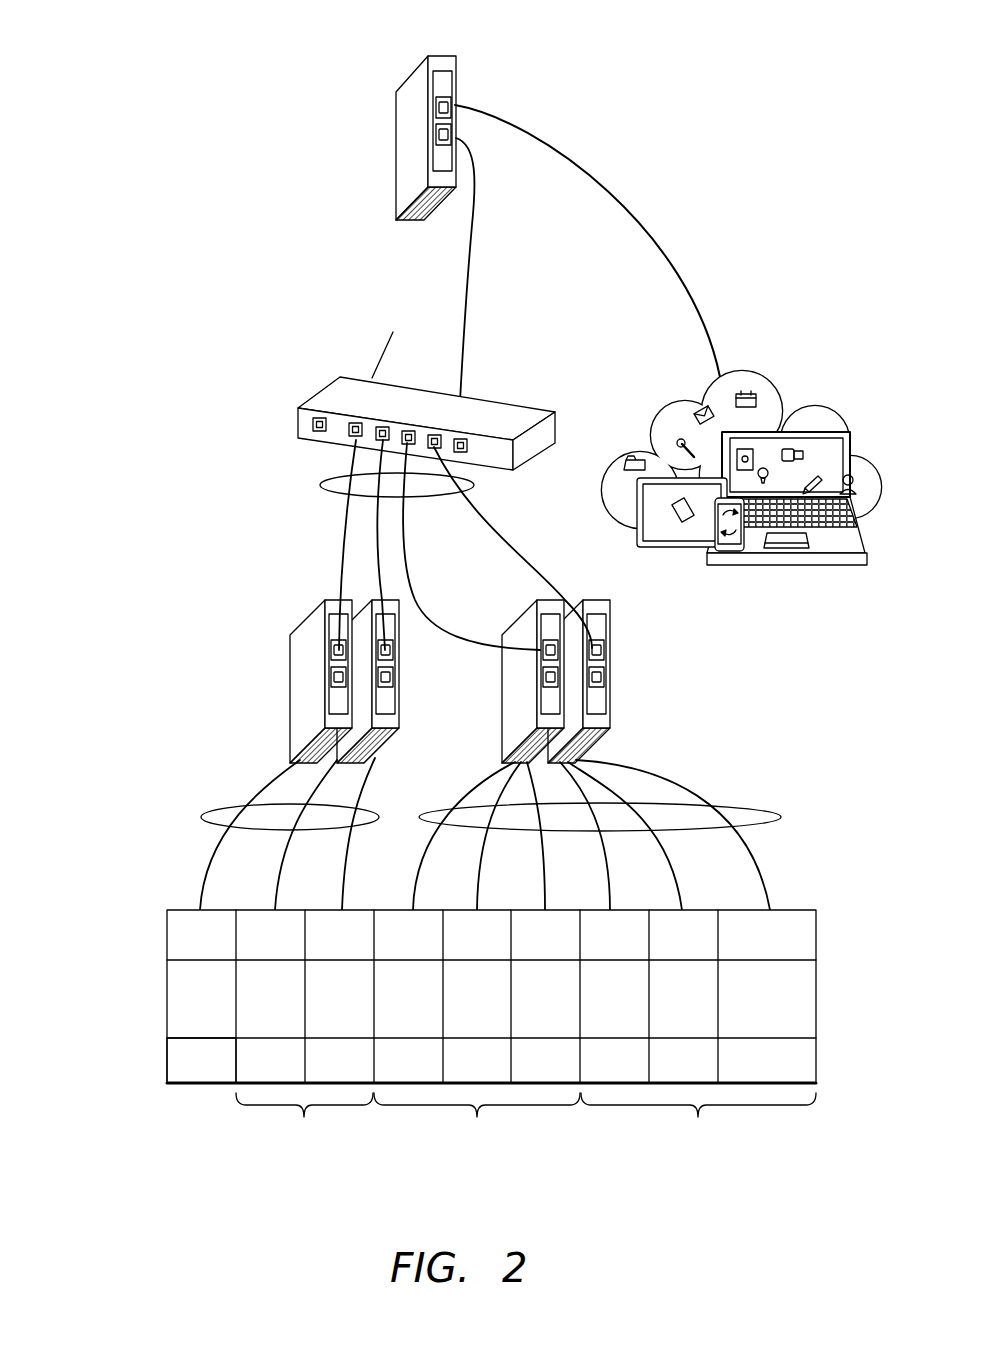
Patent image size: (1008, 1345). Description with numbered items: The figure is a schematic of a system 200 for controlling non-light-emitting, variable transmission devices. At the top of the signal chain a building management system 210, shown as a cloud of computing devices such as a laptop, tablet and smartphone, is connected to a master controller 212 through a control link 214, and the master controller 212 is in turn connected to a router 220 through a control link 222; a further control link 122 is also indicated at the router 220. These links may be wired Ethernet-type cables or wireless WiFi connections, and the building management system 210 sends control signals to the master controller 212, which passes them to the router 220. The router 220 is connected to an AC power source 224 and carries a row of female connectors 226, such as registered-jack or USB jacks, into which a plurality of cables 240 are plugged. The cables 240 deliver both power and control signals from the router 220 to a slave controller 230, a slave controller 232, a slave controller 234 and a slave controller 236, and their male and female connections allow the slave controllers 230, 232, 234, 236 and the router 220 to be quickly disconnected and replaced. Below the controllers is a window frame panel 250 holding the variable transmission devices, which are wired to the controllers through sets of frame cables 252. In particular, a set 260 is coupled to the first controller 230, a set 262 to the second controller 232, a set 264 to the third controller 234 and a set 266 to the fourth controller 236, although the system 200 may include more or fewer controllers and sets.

The system 200 is at (740, 48).
The building management system 210 is at (764, 356).
The master controller 212 is at (395, 147).
The control link 214 is at (611, 198).
The router 220 is at (426, 387).
The control link 222 is at (470, 270).
The AC power source 224 is at (372, 372).
The female connectors 226 is at (407, 428).
The control link 122 is at (548, 452).
The slave controller 230 is at (300, 638).
The slave controller 232 is at (399, 643).
The slave controller 234 is at (518, 702).
The slave controller 236 is at (608, 677).
The cables 240 is at (320, 483).
The window frame panel 250 is at (429, 1035).
The frame cables 252 is at (205, 818).
The set of non-light-emitting, variable transmission devices 260 is at (205, 1088).
The set of non-light-emitting, variable transmission devices 262 is at (304, 1126).
The set of non-light-emitting, variable transmission devices 264 is at (477, 1126).
The set of non-light-emitting, variable transmission devices 266 is at (698, 1126).